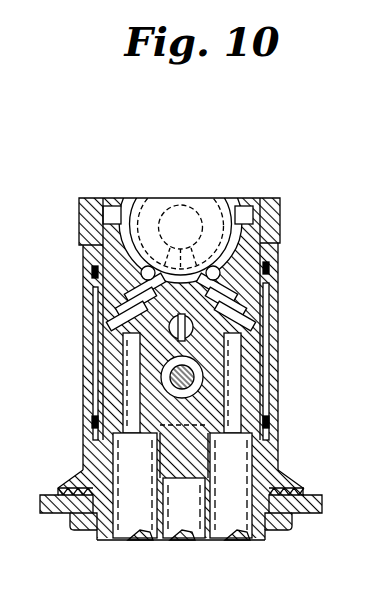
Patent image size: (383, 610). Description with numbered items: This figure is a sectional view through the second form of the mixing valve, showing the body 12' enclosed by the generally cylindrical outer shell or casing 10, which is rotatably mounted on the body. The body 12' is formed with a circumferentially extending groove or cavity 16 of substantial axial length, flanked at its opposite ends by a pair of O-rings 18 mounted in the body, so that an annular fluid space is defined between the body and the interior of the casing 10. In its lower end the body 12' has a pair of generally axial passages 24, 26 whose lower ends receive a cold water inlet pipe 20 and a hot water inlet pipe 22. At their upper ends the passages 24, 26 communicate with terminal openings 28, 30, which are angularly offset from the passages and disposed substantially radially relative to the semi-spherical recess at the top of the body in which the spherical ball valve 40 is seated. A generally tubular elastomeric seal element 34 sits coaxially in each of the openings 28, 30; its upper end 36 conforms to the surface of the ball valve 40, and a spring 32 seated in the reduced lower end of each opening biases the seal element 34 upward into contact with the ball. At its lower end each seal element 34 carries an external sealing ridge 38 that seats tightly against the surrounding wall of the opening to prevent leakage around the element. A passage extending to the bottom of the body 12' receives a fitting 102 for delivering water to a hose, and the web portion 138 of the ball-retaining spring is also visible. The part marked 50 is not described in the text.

The outer shell or casing 10 is at (291, 413).
The body 12' is at (181, 369).
The groove or cavity 16 is at (100, 373).
The O-rings 18 is at (269, 268).
The cold water inlet pipe 20 is at (137, 540).
The hot water inlet pipe 22 is at (240, 540).
The passage 24 is at (128, 385).
The passage 26 is at (233, 369).
The terminal opening 28 is at (118, 299).
The terminal opening 30 is at (268, 307).
The spring 32 is at (125, 322).
The seal element 34 is at (221, 271).
The upper end 36 is at (148, 268).
The sealing ridge 38 is at (247, 289).
The ball valve 40 is at (176, 199).
The housing 50 is at (277, 205).
The fitting 102 is at (185, 540).
The web portion 138 is at (193, 337).